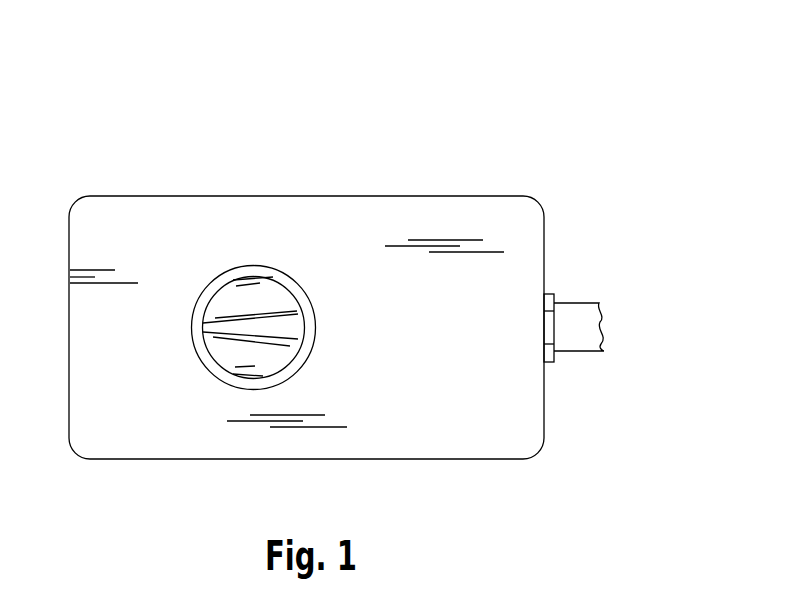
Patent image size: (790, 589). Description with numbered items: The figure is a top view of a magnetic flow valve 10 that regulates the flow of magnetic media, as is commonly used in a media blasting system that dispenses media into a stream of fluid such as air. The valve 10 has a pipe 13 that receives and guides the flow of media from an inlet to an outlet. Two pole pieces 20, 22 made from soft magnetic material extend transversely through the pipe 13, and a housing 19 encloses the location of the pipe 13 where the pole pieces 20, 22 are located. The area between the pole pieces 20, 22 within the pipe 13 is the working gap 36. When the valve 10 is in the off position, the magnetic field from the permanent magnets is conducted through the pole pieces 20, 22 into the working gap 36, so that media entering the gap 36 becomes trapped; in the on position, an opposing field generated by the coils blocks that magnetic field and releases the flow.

The magnetic flow valve 10 is at (510, 123).
The pipe 13 is at (237, 273).
The housing 19 is at (544, 404).
The pole piece 20 is at (274, 295).
The pole piece 22 is at (242, 356).
The working gap 36 is at (287, 327).